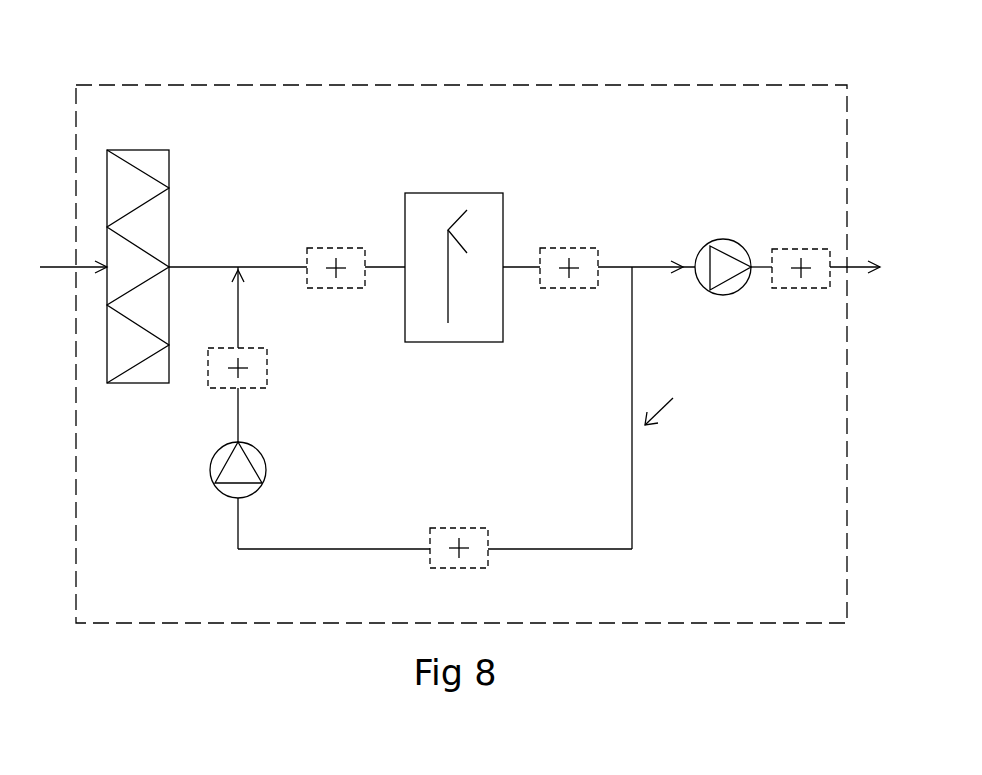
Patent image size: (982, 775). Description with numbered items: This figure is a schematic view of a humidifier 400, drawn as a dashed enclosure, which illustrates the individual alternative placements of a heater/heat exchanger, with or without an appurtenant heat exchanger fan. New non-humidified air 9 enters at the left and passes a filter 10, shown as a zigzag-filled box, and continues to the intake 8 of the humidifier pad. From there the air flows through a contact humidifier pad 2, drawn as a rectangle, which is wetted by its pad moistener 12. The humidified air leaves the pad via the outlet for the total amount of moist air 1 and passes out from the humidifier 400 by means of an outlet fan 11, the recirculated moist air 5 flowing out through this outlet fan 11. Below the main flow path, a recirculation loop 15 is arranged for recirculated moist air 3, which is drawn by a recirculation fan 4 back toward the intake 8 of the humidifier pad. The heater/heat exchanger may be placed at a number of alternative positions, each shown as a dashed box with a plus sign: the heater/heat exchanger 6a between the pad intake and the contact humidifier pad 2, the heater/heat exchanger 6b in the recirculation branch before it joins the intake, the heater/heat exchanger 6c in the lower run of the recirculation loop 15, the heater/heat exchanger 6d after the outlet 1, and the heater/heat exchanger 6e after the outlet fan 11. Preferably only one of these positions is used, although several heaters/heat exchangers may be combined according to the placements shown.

The humidifier 400 is at (705, 100).
The filter 10 is at (150, 165).
The new non-humidified air 9 is at (205, 265).
The intake of a humidifier pad 8 is at (276, 265).
The heater/heat exchanger 6a is at (332, 248).
The contact humidifier pad 2 is at (453, 193).
The pad moistener 12 is at (448, 277).
The outlet for total amount of moist air 1 is at (520, 265).
The heater/heat exchanger 6d is at (565, 290).
The recirculated moist air 5 is at (652, 265).
The outlet fan 11 is at (738, 243).
The heater/heat exchanger 6e is at (800, 283).
The recirculated moist air 3 is at (632, 348).
The recirculation loop 15 is at (679, 396).
The heater/heat exchanger 6c is at (472, 563).
The recirculation fan 4 is at (263, 452).
The heater/heat exchanger 6b is at (267, 370).